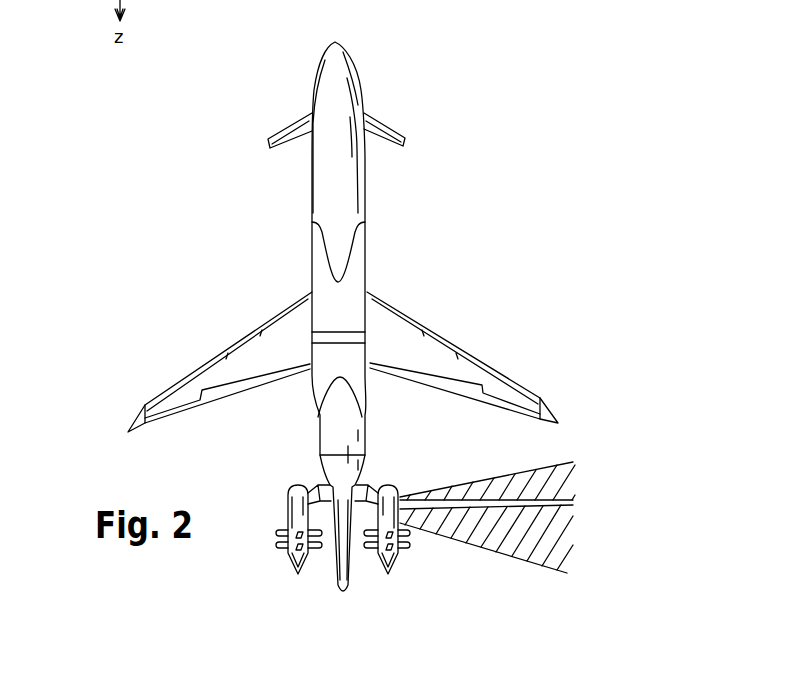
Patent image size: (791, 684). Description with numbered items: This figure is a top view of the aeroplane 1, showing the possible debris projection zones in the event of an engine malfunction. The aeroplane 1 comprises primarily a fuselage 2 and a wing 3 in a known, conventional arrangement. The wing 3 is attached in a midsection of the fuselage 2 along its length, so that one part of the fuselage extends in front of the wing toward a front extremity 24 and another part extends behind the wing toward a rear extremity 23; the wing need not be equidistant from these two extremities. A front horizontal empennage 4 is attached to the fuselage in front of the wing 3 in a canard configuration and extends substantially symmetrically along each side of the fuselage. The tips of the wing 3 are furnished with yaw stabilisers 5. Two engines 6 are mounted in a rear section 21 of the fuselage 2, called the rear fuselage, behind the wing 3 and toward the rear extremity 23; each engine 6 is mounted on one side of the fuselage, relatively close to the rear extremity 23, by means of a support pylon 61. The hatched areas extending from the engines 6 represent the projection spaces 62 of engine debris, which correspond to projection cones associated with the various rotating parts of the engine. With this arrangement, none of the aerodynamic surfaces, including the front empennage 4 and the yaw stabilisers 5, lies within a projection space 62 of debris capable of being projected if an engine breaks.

The aeroplane 1 is at (264, 281).
The fuselage 2 is at (380, 210).
The wing 3 is at (203, 340).
The front horizontal empennage 4 is at (381, 117).
The yaw stabilisers 5 is at (125, 412).
The engines 6 is at (286, 504).
The rear section 21 is at (348, 446).
The rear extremity 23 is at (344, 596).
The front extremity 24 is at (335, 42).
The support pylon 61 is at (317, 501).
The projection space 62 is at (553, 477).